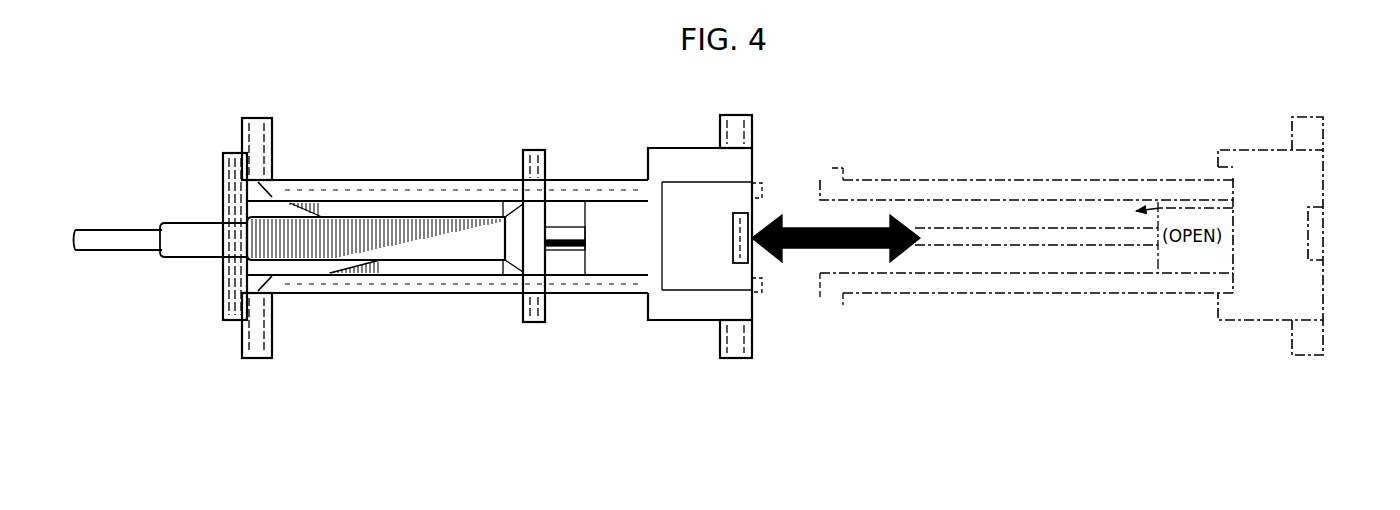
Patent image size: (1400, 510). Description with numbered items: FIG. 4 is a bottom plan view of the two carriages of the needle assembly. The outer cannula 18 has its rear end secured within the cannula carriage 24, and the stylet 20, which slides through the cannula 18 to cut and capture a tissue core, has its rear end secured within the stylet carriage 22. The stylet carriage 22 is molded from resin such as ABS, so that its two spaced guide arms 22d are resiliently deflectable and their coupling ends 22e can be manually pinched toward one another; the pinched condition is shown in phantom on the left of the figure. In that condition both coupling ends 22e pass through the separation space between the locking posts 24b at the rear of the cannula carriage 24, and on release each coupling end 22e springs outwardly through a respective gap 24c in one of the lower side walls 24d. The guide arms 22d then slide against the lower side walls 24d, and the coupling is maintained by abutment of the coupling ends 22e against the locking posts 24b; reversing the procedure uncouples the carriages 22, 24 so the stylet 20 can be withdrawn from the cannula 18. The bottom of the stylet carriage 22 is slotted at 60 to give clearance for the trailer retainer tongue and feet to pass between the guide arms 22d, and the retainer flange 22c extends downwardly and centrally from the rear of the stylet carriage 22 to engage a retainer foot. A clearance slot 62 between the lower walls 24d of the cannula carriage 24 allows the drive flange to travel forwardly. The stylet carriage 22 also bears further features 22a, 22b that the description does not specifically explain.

The outer cannula 18 is at (177, 228).
The stylet 20 is at (132, 249).
The stylet carriage 22 is at (633, 320).
The housing end flange 22a is at (722, 117).
The housing end block 22b is at (1218, 166).
The retainer flange 22c is at (1320, 240).
The guide arms 22d is at (428, 200).
The coupling ends 22e is at (272, 178).
The cannula carriage 24 is at (215, 153).
The locking posts 24b is at (539, 150).
The gap 24c is at (498, 190).
The lower side walls 24d is at (362, 200).
The slot 60 is at (1235, 207).
The clearance slot 62 is at (314, 228).